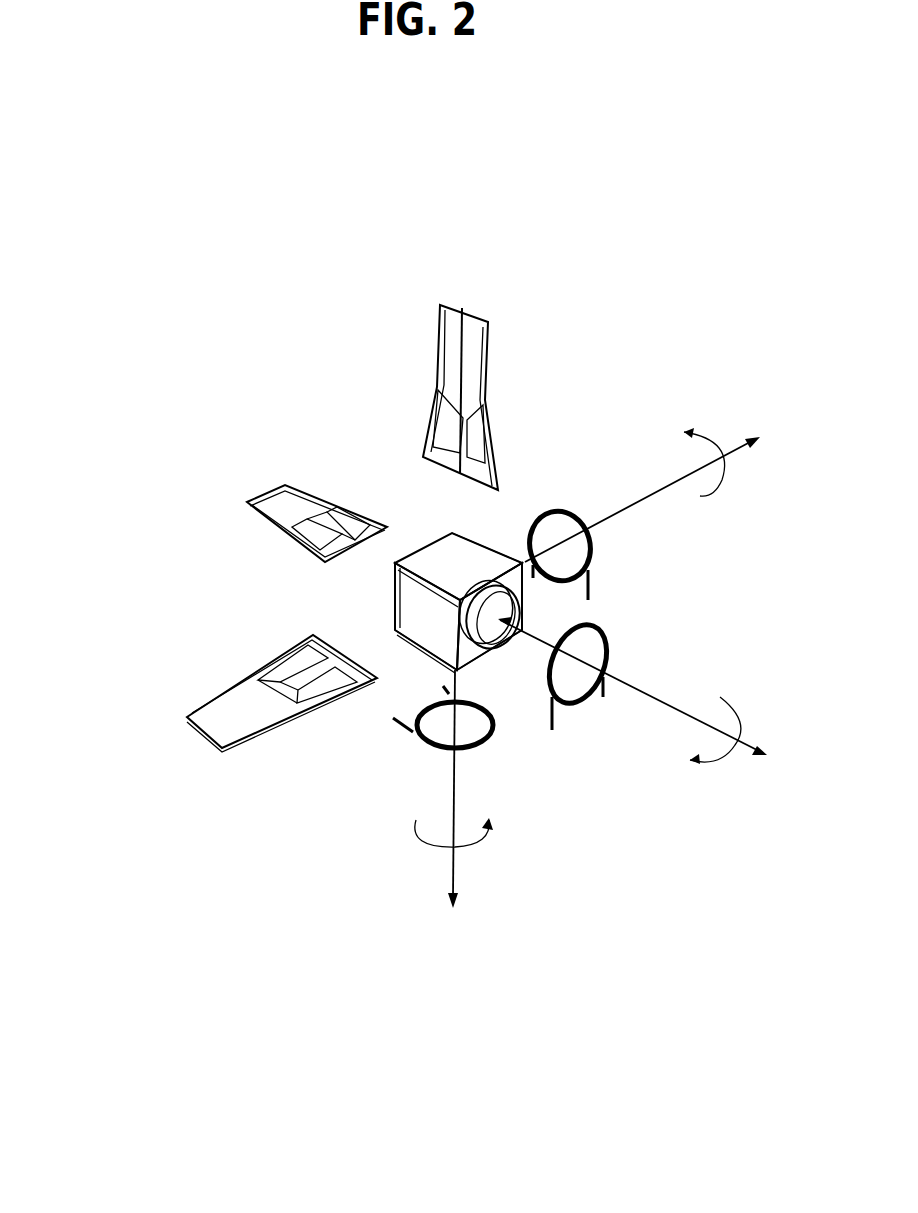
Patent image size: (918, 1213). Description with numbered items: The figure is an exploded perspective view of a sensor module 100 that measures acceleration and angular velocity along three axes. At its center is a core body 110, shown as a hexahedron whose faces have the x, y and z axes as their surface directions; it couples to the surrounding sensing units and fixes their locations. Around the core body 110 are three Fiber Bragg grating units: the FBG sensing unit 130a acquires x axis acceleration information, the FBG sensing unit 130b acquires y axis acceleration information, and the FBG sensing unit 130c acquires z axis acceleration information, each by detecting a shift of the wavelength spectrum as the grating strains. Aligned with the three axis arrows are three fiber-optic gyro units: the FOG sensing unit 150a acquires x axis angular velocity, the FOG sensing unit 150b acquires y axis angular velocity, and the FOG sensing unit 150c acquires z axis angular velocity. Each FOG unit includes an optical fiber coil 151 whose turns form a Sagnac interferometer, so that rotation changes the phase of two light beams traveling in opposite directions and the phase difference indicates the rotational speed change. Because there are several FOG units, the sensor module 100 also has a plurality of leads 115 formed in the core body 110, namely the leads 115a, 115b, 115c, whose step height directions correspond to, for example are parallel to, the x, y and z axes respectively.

The sensor module 100 is at (233, 344).
The core body 110 is at (405, 608).
The lead 115 is at (748, 980).
The lead 115a is at (500, 643).
The lead 115b is at (498, 552).
The lead 115c is at (433, 660).
The FBG sensing unit 130a is at (247, 500).
The FBG sensing unit 130b is at (235, 703).
The FBG sensing unit 130c is at (455, 305).
The FOG sensing unit 150a is at (607, 635).
The FOG sensing unit 150b is at (565, 512).
The FOG sensing unit 150c is at (490, 742).
The optical fiber coil 151 is at (553, 512).